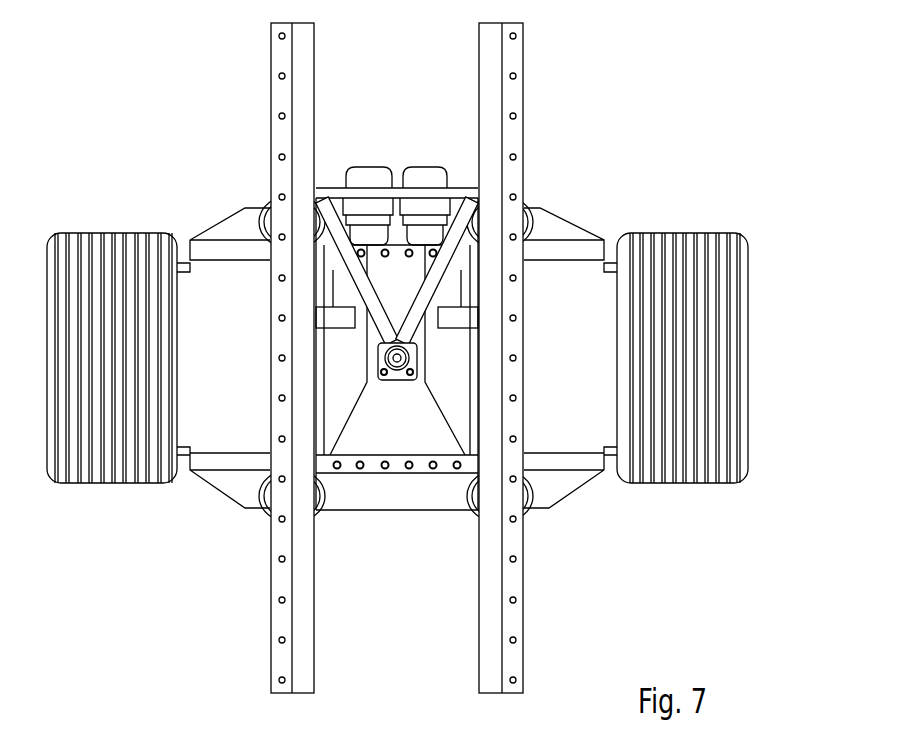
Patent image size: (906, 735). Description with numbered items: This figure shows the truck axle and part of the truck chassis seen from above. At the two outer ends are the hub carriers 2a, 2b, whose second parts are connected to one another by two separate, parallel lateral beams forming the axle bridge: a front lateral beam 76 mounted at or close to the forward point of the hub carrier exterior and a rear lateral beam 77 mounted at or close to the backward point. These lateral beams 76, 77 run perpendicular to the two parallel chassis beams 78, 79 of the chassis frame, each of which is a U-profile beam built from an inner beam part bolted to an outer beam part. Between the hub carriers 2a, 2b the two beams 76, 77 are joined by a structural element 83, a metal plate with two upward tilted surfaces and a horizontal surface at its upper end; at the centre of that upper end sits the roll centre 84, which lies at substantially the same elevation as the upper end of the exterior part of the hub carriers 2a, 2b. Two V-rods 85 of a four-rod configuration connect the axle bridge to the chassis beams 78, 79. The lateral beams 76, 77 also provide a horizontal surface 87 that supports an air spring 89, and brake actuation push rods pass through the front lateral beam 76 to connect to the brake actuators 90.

The hub carrier 2a is at (215, 300).
The hub carrier 2b is at (573, 288).
The front lateral beam 76 is at (566, 228).
The rear lateral beam 77 is at (230, 493).
The chassis beam 78 is at (302, 90).
The chassis beam 79 is at (493, 70).
The structural element 83 is at (405, 425).
The roll centre 84 is at (405, 358).
The V-rods 85 is at (327, 222).
The horizontal surface 87 is at (420, 500).
The air spring 89 is at (268, 513).
The brake actuator 90 is at (362, 175).